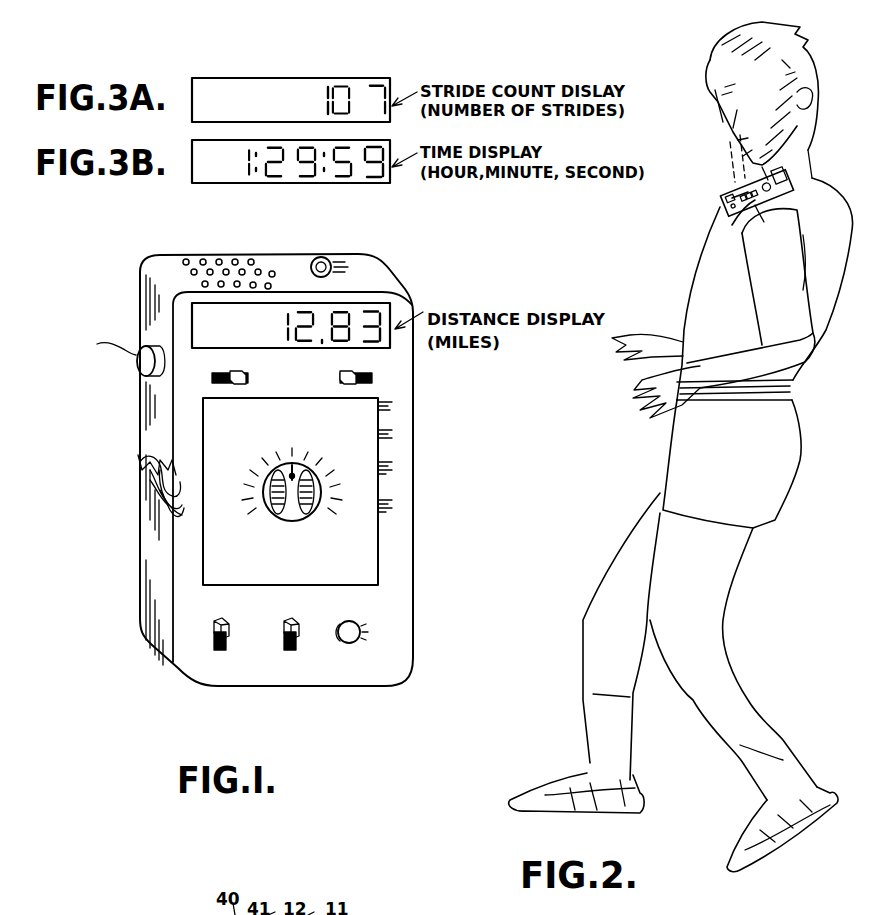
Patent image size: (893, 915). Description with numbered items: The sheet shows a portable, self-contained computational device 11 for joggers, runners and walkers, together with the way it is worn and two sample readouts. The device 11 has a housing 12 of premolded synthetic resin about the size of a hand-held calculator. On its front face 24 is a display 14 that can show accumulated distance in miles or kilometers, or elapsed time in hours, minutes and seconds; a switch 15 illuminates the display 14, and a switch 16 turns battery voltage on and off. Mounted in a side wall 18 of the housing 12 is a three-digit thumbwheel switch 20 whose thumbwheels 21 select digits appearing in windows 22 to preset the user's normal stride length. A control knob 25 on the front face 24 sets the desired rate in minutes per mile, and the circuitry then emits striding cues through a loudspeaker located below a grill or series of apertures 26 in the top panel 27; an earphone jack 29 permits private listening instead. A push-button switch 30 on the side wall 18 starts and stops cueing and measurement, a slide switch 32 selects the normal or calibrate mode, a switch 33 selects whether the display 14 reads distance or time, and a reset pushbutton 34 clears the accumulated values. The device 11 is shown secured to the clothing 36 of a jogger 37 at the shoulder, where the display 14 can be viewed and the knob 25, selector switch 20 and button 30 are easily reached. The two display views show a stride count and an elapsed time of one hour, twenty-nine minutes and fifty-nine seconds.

In FIG. 1, the portable self-contained computational device 11 is at (413, 410).
In FIG. 2, the portable self-contained computational device 11 is at (720, 202).
In FIG. 1, the housing 12 is at (412, 650).
In FIG. 3A, the display 14 is at (313, 78).
In FIG. 3B, the display 14 is at (360, 184).
In FIG. 1, the display 14 is at (198, 316).
In FIG. 2, the display 14 is at (733, 195).
In FIG. 1, the switch 15 is at (358, 383).
In FIG. 1, the switch 16 is at (232, 387).
In FIG. 1, the side wall 18 is at (155, 590).
In FIG. 1, the three-digit thumbwheel switch 20 is at (155, 495).
In FIG. 2, the three-digit thumbwheel switch 20 is at (770, 224).
In FIG. 1, the thumbwheels 21 is at (176, 455).
In FIG. 1, the windows 22 is at (148, 478).
In FIG. 1, the front face 24 is at (393, 580).
In FIG. 1, the control knob 25 is at (305, 466).
In FIG. 2, the control knob 25 is at (768, 186).
In FIG. 1, the grill or series of apertures 26 is at (255, 223).
In FIG. 1, the top panel 27 is at (373, 268).
In FIG. 1, the earphone jack 29 is at (322, 257).
In FIG. 1, the push-button switch 30 is at (134, 365).
In FIG. 1, the slide switch 32 is at (284, 630).
In FIG. 1, the switch 33 is at (214, 630).
In FIG. 1, the reset pushbutton 34 is at (345, 645).
In FIG. 2, the clothing 36 is at (727, 237).
In FIG. 2, the jogger 37 is at (832, 220).